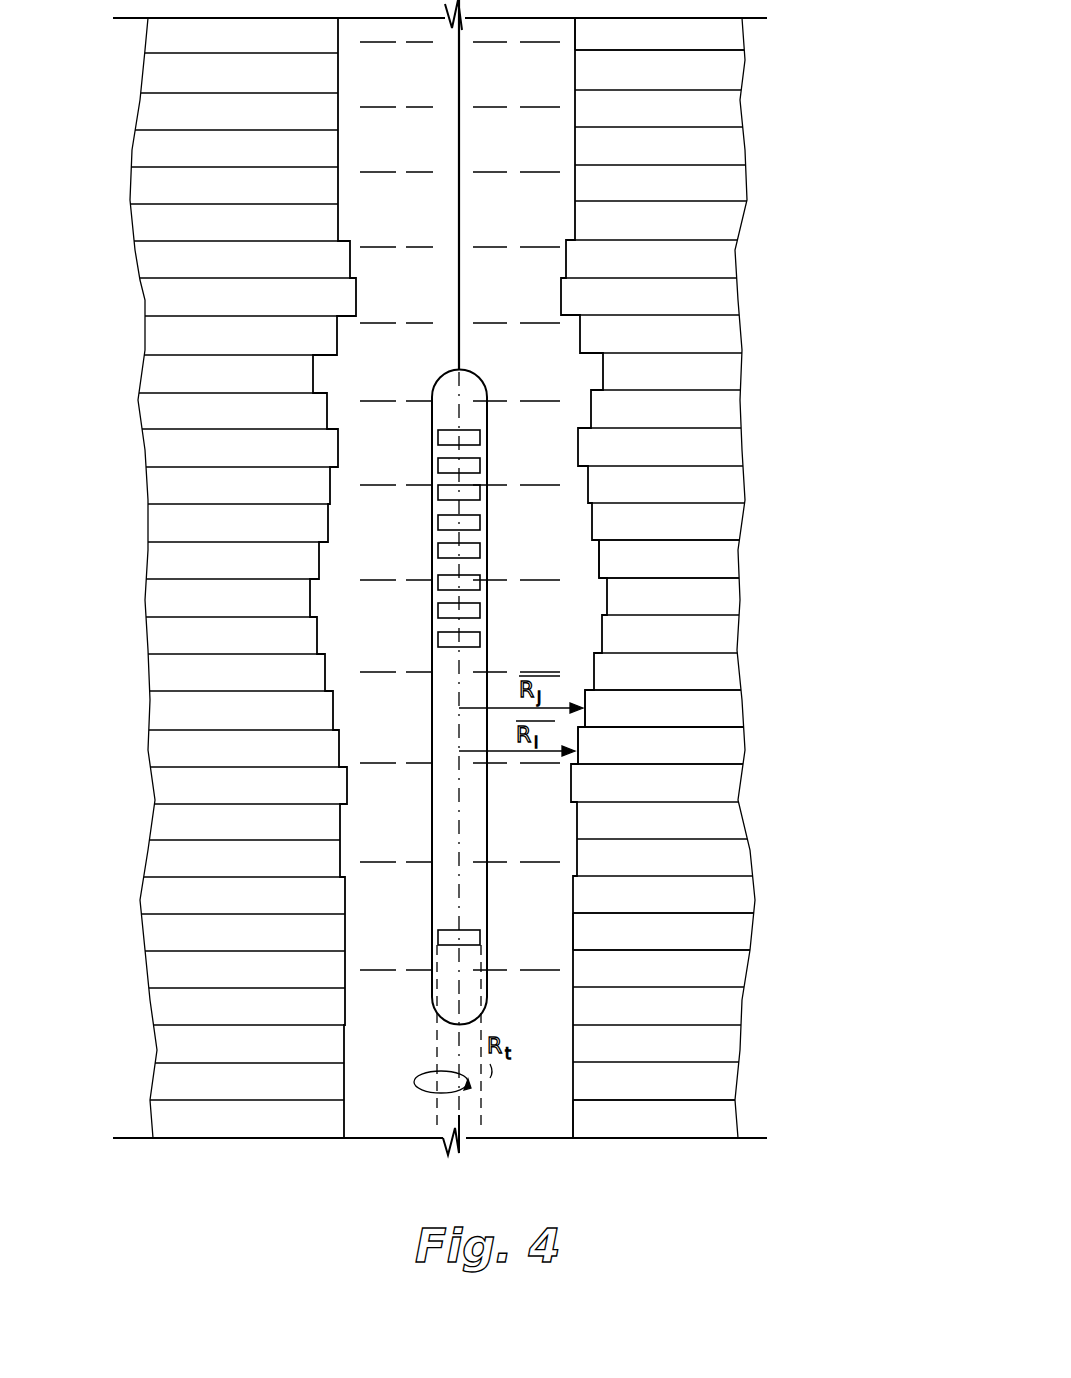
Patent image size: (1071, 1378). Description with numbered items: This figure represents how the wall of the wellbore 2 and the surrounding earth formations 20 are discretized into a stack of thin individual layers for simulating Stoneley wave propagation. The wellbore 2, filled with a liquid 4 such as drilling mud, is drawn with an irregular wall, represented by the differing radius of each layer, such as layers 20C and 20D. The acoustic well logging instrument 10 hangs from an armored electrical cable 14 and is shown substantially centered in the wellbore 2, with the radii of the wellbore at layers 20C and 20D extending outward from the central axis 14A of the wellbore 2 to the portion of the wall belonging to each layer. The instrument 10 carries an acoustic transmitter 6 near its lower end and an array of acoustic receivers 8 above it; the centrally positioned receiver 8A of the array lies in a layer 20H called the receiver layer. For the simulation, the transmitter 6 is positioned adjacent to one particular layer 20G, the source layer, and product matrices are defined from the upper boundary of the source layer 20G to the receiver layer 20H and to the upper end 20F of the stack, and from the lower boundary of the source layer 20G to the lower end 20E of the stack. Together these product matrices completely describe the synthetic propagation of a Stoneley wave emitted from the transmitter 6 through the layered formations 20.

The wellbore 2 is at (575, 213).
The liquid 4 is at (409, 223).
The acoustic transmitter 6 is at (438, 938).
The acoustic receivers 8 is at (456, 535).
The centrally positioned receiver 8A is at (438, 549).
The acoustic well logging instrument 10 is at (431, 723).
The armored electrical cable 14 is at (462, 71).
The central axis of the wellbore 14A is at (393, 1154).
The earth formations 20 is at (138, 410).
The layer j 20C is at (735, 708).
The layer i 20D is at (728, 747).
The lower end of the stack 20E is at (725, 1120).
The upper end of the stack 20F is at (718, 36).
The source layer 20G is at (740, 931).
The receiver layer 20H is at (730, 558).